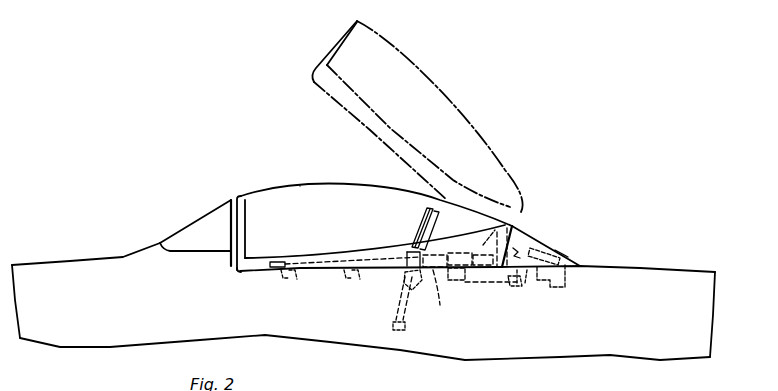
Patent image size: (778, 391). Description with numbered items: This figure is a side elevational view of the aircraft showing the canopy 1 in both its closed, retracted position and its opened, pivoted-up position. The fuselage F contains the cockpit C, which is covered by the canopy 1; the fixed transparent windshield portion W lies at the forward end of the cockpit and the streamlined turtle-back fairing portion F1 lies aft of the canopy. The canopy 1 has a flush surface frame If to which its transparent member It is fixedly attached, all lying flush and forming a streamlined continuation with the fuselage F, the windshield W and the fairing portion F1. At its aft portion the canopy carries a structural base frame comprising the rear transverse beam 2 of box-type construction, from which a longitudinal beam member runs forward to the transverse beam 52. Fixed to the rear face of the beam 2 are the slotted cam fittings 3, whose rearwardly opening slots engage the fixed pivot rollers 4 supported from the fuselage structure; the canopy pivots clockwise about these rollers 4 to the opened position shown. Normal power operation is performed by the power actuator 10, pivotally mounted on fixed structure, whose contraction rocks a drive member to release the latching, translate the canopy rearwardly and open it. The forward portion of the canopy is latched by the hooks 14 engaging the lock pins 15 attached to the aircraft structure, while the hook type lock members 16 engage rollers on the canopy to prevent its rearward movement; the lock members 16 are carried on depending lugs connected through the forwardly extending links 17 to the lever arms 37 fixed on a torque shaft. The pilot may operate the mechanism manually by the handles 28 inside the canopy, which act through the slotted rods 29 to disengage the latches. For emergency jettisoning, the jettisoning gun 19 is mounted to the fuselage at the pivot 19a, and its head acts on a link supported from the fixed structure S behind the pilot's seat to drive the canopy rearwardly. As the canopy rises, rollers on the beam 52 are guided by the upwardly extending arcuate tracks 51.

The canopy 1 is at (337, 181).
The flush surface frame If is at (238, 197).
The transparent member It is at (295, 198).
The fuselage F is at (78, 262).
The fixed transparent windshield portion W is at (200, 227).
The cockpit C is at (232, 263).
The handles 28 is at (280, 261).
The slotted rods 29 is at (338, 257).
The fixed structure S is at (421, 215).
The arcuate tracks 51 is at (414, 227).
The rear transverse beam 2 is at (483, 246).
The slotted cam fittings 3 is at (526, 247).
The fairing portion F1 is at (556, 256).
The power actuator 10 is at (565, 251).
The lock pins 15 is at (278, 283).
The hooks 14 is at (297, 280).
The jettisoning gun 19 is at (401, 297).
The pivot 19a is at (393, 328).
The transverse beam 52 is at (440, 305).
The hook type lock members 16 is at (463, 283).
The fixed pivot rollers 4 is at (512, 281).
The forwardly extending links 17 is at (519, 272).
The lever arms 37 is at (535, 275).